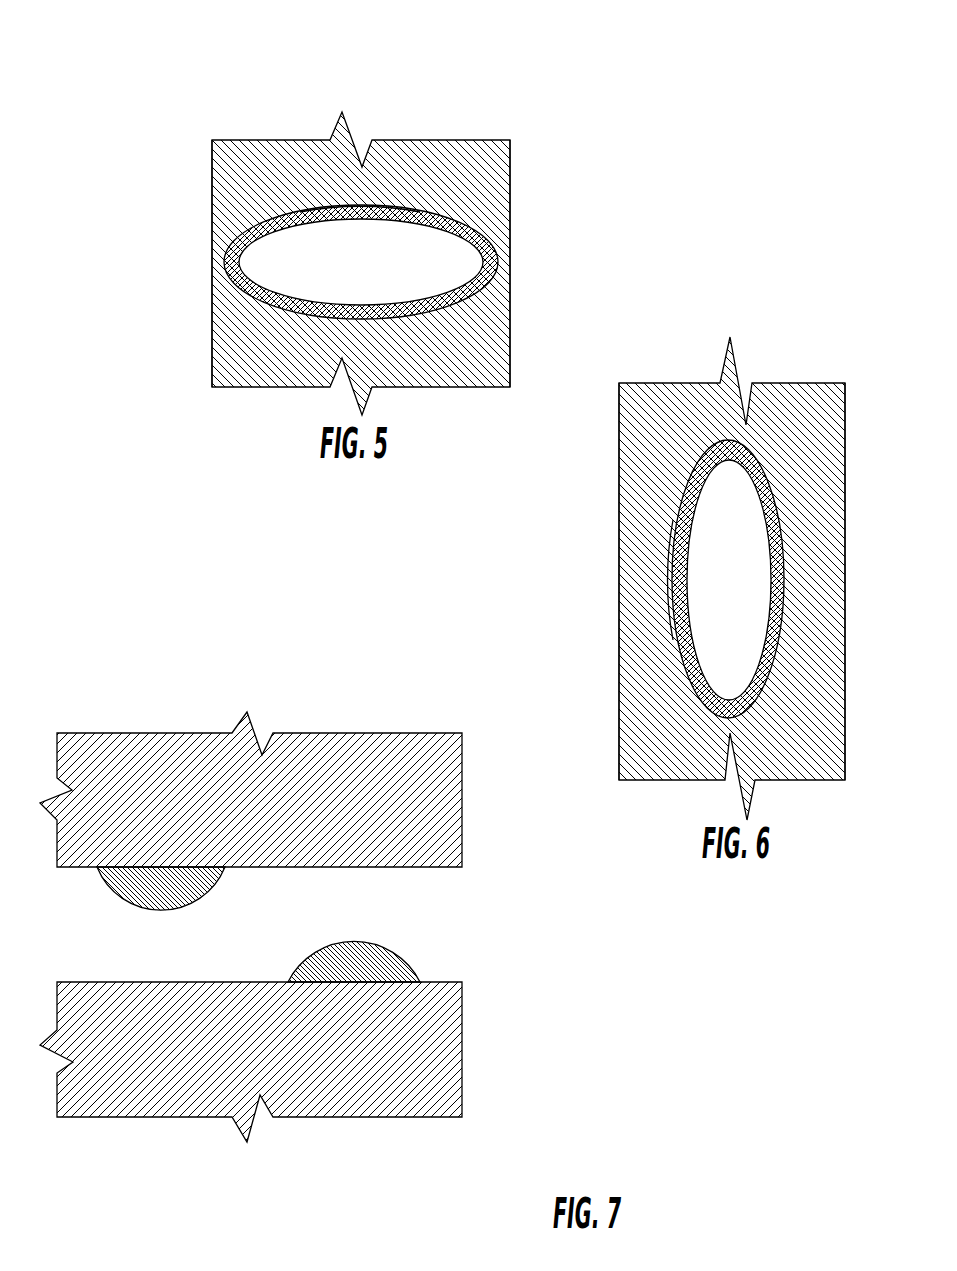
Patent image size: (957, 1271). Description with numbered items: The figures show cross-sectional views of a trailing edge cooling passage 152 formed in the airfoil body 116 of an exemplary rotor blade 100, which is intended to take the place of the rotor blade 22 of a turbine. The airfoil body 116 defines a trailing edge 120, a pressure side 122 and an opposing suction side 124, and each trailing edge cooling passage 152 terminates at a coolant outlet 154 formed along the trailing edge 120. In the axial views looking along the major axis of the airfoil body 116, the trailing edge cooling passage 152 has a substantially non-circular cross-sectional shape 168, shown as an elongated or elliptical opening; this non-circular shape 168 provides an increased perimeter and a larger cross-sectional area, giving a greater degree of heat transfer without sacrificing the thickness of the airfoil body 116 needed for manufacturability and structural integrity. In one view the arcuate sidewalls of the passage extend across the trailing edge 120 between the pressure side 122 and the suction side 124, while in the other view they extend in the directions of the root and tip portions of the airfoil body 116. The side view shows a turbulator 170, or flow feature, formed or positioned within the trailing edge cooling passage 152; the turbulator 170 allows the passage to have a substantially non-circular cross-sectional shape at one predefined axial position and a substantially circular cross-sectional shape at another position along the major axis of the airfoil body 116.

In FIG. 5, the rotor blade 100 is at (426, 60).
In FIG. 6, the rotor blade 100 is at (794, 358).
In FIG. 7, the rotor blade 100 is at (266, 708).
In FIG. 5, the rotor blade 22 is at (432, 32).
In FIG. 6, the rotor blade 22 is at (803, 313).
In FIG. 7, the rotor blade 22 is at (275, 672).
In FIG. 5, the airfoil body 116 is at (235, 149).
In FIG. 6, the airfoil body 116 is at (660, 455).
In FIG. 7, the airfoil body 116 is at (413, 750).
In FIG. 5, the trailing edge 120 is at (357, 234).
In FIG. 6, the trailing edge 120 is at (728, 578).
In FIG. 7, the trailing edge 120 is at (331, 756).
In FIG. 5, the pressure side 122 is at (212, 197).
In FIG. 6, the pressure side 122 is at (619, 543).
In FIG. 5, the suction side 124 is at (510, 200).
In FIG. 6, the suction side 124 is at (845, 595).
In FIG. 5, the trailing edge cooling passage 152 is at (378, 267).
In FIG. 6, the trailing edge cooling passage 152 is at (744, 587).
In FIG. 7, the trailing edge cooling passage 152 is at (315, 922).
In FIG. 5, the coolant outlet 154 is at (500, 250).
In FIG. 6, the coolant outlet 154 is at (776, 498).
In FIG. 7, the coolant outlet 154 is at (450, 982).
In FIG. 5, the non-circular cross-sectional shape 168 is at (380, 206).
In FIG. 6, the non-circular cross-sectional shape 168 is at (673, 587).
In FIG. 7, the turbulator 170 is at (138, 898).